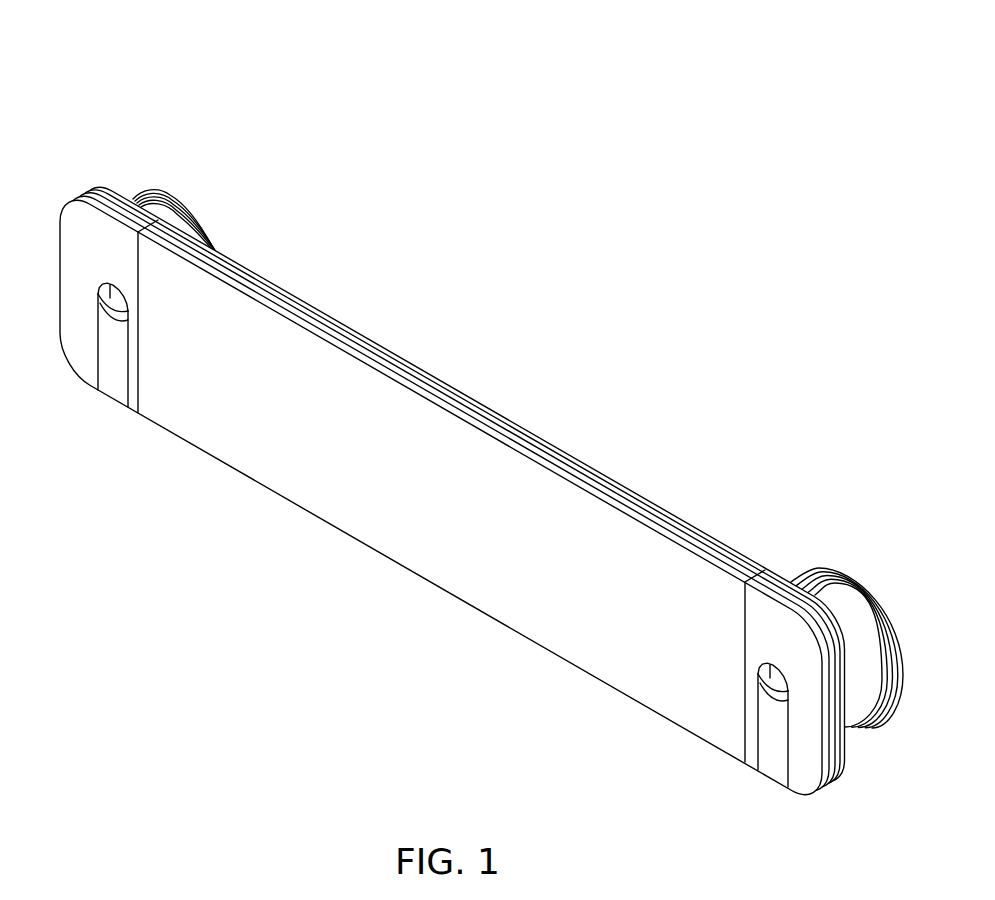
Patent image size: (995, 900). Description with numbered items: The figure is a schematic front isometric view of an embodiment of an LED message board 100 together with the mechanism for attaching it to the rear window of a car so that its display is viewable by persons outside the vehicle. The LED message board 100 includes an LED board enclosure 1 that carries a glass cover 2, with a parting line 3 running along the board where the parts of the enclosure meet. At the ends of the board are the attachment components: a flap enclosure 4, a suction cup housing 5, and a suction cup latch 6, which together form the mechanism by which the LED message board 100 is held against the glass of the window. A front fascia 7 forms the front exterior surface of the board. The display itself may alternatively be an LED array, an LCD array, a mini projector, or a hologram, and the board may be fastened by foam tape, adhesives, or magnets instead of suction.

The LED message board 100 is at (177, 85).
The LED board enclosure 1 is at (340, 338).
The glass cover 2 is at (407, 420).
The parting line 3 is at (757, 560).
The flap enclosure 4 is at (838, 590).
The suction cup housing 5 is at (857, 715).
The suction cup latch 6 is at (110, 385).
The front fascia 7 is at (78, 350).